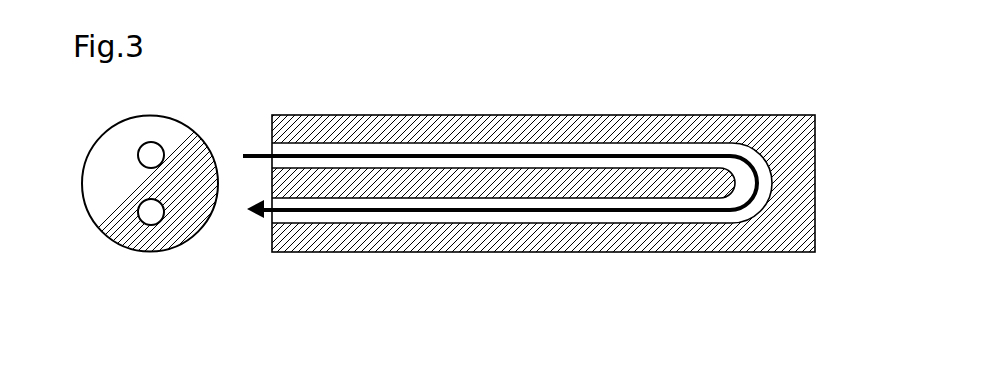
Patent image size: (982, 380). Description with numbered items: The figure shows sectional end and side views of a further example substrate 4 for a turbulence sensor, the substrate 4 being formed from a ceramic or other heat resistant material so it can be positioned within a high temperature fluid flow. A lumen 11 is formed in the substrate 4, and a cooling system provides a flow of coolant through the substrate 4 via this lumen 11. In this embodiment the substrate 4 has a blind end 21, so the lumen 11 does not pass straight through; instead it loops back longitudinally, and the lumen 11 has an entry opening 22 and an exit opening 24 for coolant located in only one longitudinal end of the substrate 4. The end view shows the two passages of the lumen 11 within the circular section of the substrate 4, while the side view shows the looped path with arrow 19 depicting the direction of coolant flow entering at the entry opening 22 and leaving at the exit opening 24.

The substrate 4 is at (102, 162).
The lumen 11 is at (140, 143).
The arrow 19 is at (387, 156).
The blind end 21 is at (806, 165).
The entry opening 22 is at (153, 157).
The exit opening 24 is at (150, 216).